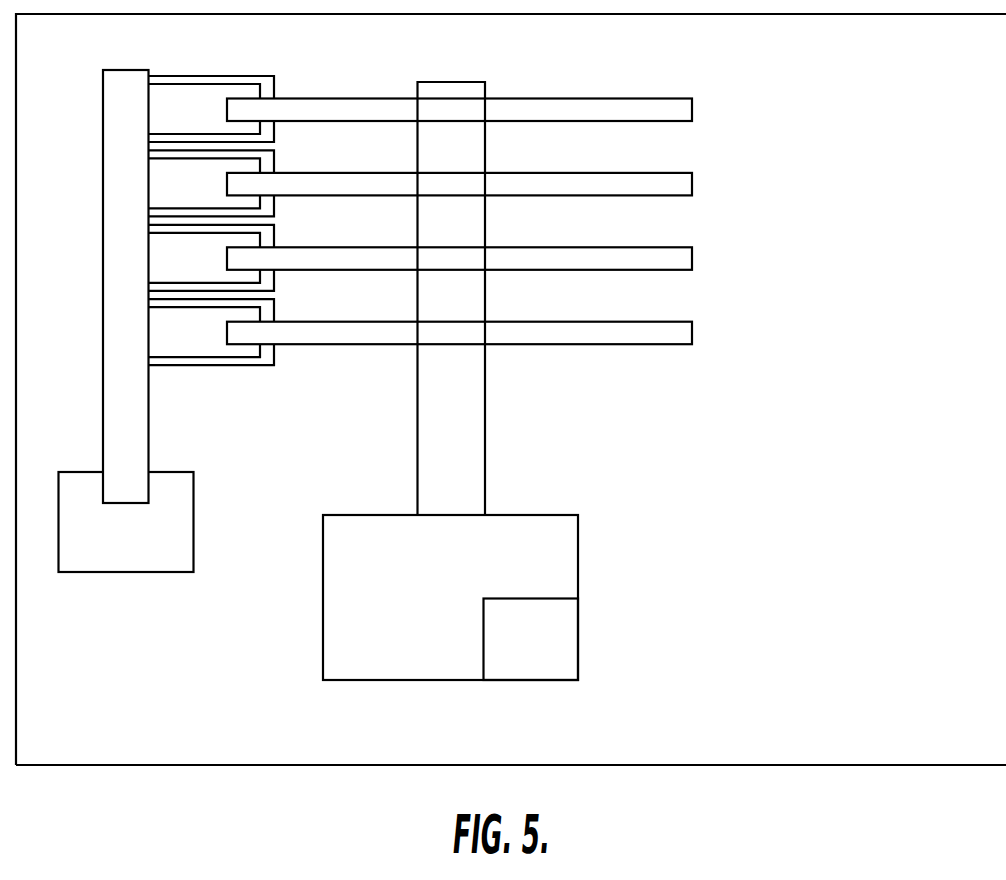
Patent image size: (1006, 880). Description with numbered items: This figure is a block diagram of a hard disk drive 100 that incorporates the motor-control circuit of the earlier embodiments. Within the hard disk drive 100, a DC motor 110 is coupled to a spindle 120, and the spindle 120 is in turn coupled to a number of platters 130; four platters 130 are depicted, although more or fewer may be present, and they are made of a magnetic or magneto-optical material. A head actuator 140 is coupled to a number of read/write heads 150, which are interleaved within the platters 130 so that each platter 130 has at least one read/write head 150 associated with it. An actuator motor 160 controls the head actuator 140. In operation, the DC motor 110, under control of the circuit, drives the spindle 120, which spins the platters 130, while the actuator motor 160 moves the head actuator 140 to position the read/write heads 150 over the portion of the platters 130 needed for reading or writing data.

The hard disk drive 100 is at (945, 702).
The DC motor 110 is at (443, 618).
The spindle 120 is at (473, 435).
The platters 130 is at (685, 109).
The head actuator 140 is at (145, 420).
The read/write heads 150 is at (275, 127).
The actuator motor 160 is at (142, 548).